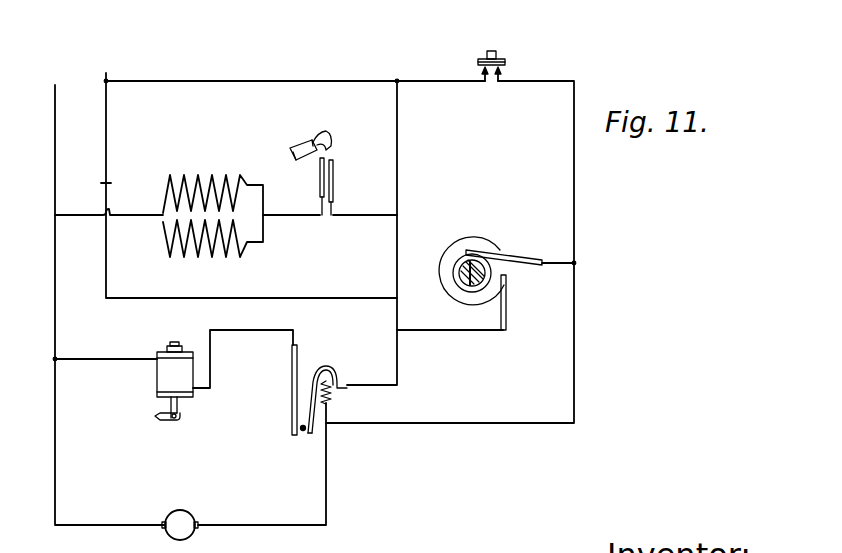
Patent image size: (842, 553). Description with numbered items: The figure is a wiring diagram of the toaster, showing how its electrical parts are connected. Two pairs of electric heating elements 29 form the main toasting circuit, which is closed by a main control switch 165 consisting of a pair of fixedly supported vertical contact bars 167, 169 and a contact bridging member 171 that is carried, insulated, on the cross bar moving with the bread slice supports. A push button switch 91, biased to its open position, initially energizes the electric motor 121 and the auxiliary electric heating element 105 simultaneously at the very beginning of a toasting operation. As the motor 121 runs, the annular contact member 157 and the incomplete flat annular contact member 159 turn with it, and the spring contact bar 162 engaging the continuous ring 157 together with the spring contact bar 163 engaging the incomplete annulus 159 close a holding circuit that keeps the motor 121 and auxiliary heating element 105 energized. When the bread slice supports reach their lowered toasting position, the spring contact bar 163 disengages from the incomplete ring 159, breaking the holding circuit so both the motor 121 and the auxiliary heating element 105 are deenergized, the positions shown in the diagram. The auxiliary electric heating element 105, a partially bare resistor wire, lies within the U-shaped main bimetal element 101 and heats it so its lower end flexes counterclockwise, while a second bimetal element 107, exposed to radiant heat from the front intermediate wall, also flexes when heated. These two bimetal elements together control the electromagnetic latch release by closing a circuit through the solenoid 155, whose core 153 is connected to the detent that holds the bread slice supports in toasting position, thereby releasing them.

The electric heating elements 29 is at (190, 185).
The push button switch 91 is at (501, 57).
The main bimetal element 101 is at (316, 432).
The auxiliary electric heating element 105 is at (333, 395).
The second bimetal element 107 is at (291, 398).
The electric motor 121 is at (183, 510).
The core 153 is at (170, 408).
The solenoid 155 is at (166, 379).
The annular contact member 157 is at (455, 271).
The incomplete flat annular contact member 159 is at (478, 240).
The spring contact bar 162 is at (536, 259).
The spring contact bar 163 is at (509, 318).
The main control switch 165 is at (340, 164).
The contact bar 167 is at (318, 189).
The contact bar 169 is at (338, 189).
The contact bridging member 171 is at (325, 139).